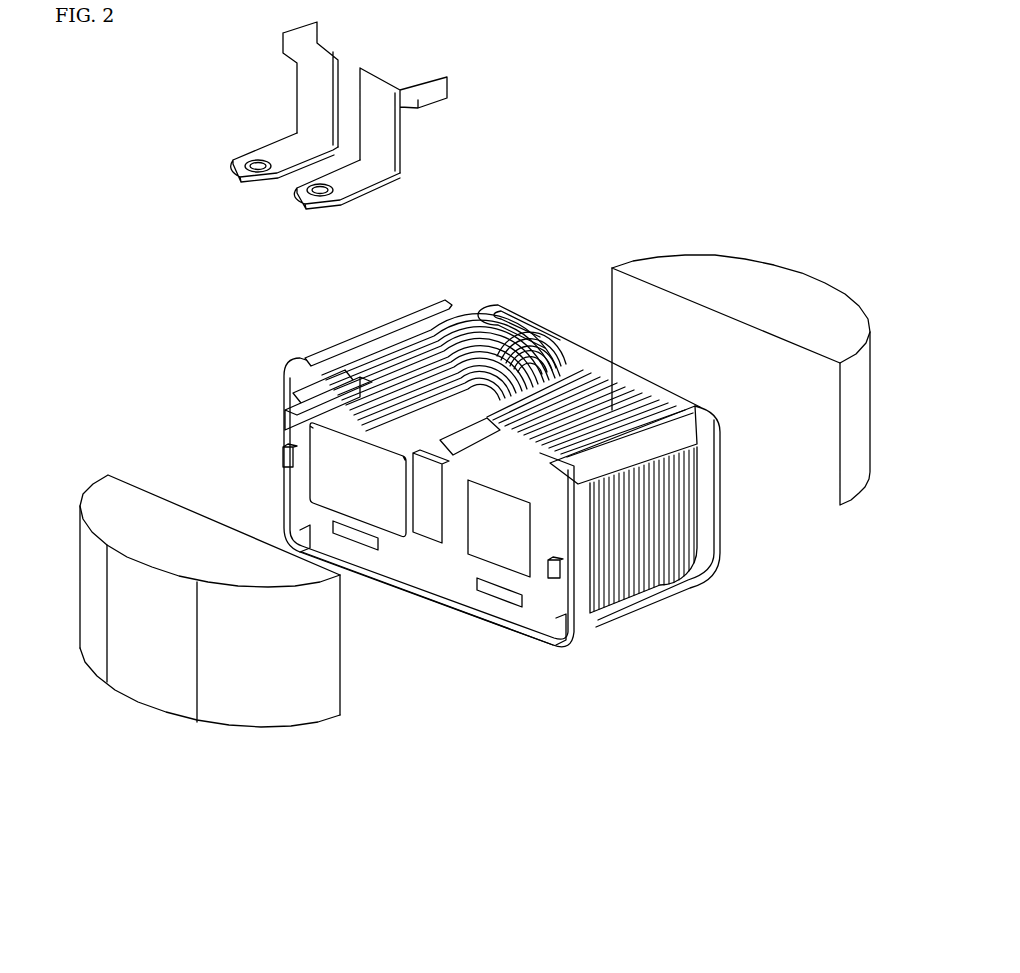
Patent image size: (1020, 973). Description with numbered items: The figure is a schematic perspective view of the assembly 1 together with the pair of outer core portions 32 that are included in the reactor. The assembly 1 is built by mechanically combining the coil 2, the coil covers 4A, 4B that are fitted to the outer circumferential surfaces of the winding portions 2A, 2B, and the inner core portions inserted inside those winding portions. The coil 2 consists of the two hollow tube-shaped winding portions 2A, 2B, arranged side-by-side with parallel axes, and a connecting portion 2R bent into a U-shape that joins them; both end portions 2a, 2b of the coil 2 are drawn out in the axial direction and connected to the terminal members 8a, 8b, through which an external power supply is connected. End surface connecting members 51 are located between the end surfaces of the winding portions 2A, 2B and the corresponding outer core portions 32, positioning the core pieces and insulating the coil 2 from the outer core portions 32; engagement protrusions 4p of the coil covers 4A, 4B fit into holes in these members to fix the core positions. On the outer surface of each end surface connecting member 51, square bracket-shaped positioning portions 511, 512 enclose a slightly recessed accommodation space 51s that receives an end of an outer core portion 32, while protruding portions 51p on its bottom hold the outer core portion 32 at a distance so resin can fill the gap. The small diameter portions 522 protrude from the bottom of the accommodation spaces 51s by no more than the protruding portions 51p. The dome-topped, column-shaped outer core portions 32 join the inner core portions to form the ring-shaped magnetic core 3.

The assembly 1 is at (560, 298).
The coil 2 is at (531, 458).
The winding portion 2A is at (395, 344).
The winding portion 2B is at (660, 507).
The connecting portion 2R is at (507, 303).
The end portion of the coil 2a is at (298, 418).
The end portion of the coil 2b is at (400, 307).
The magnetic core 3 is at (475, 491).
The outer core portion 32 is at (733, 273).
The coil cover 4A is at (437, 300).
The coil cover 4B is at (703, 510).
The engagement protrusion 4p is at (283, 455).
The end surface connecting member 51 is at (463, 561).
The positioning portion 511 is at (343, 487).
The positioning portion 512 is at (473, 620).
The protruding portion 51p is at (427, 533).
The accommodation space 51s is at (405, 567).
The small diameter portion 522 is at (345, 492).
The terminal member 8a is at (303, 100).
The terminal member 8b is at (383, 123).